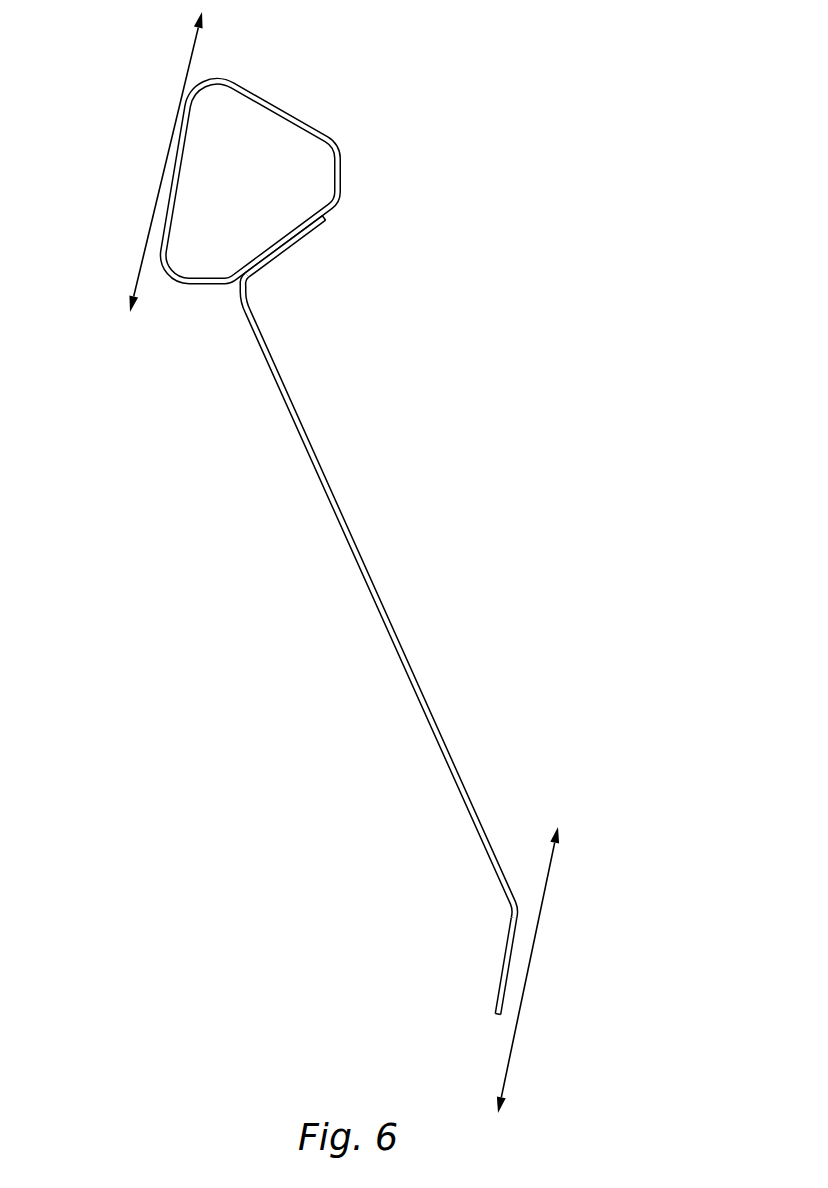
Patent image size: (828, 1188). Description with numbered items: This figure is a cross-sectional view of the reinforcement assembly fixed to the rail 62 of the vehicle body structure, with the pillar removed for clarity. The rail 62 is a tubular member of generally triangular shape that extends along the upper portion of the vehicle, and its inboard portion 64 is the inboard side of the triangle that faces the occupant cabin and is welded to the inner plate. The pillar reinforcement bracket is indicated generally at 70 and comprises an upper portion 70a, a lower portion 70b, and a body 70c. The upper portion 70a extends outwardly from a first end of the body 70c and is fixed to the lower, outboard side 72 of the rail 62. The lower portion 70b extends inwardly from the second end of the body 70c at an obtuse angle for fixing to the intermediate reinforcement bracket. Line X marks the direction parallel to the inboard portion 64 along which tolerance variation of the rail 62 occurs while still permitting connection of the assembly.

The side rail 62 is at (318, 127).
The inboard portion 64 is at (172, 171).
The spring wire 70 is at (445, 627).
The upper portion 70a is at (307, 233).
The lower portion 70b is at (510, 967).
The body 70c is at (410, 684).
The lower, outboard side 72 is at (245, 279).
The line X is at (510, 1068).